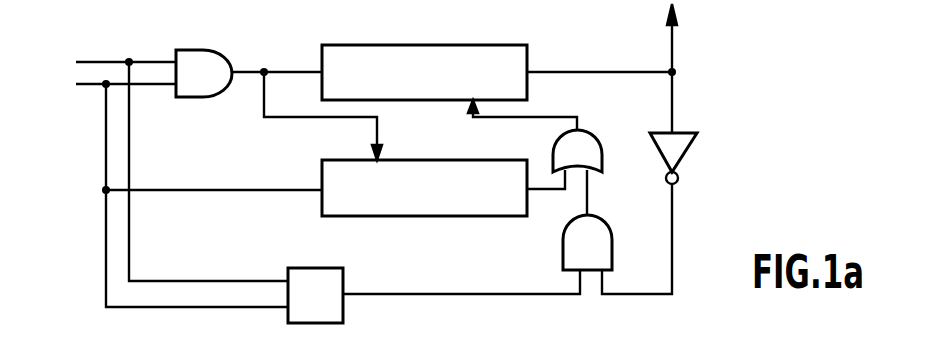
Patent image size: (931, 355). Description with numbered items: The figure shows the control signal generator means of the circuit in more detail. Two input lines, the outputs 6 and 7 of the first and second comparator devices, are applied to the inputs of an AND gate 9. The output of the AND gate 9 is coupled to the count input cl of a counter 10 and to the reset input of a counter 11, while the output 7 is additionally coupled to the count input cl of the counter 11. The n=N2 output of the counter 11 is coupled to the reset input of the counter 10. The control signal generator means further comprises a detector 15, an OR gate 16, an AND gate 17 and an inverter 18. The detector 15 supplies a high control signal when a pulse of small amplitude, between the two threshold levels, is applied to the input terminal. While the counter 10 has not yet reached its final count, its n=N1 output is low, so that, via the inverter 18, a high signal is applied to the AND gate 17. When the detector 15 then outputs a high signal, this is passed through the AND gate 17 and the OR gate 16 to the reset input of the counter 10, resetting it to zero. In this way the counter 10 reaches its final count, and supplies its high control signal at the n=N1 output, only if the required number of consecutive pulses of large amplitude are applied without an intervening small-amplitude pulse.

The output of the first comparator device 6 is at (98, 62).
The output of the second comparator device 7 is at (96, 86).
The AND gate 9 is at (200, 50).
The counter 10 is at (388, 45).
The counter 11 is at (410, 160).
The detector 15 is at (305, 268).
The OR gate 16 is at (584, 131).
The AND gate 17 is at (612, 250).
The inverter 18 is at (690, 145).